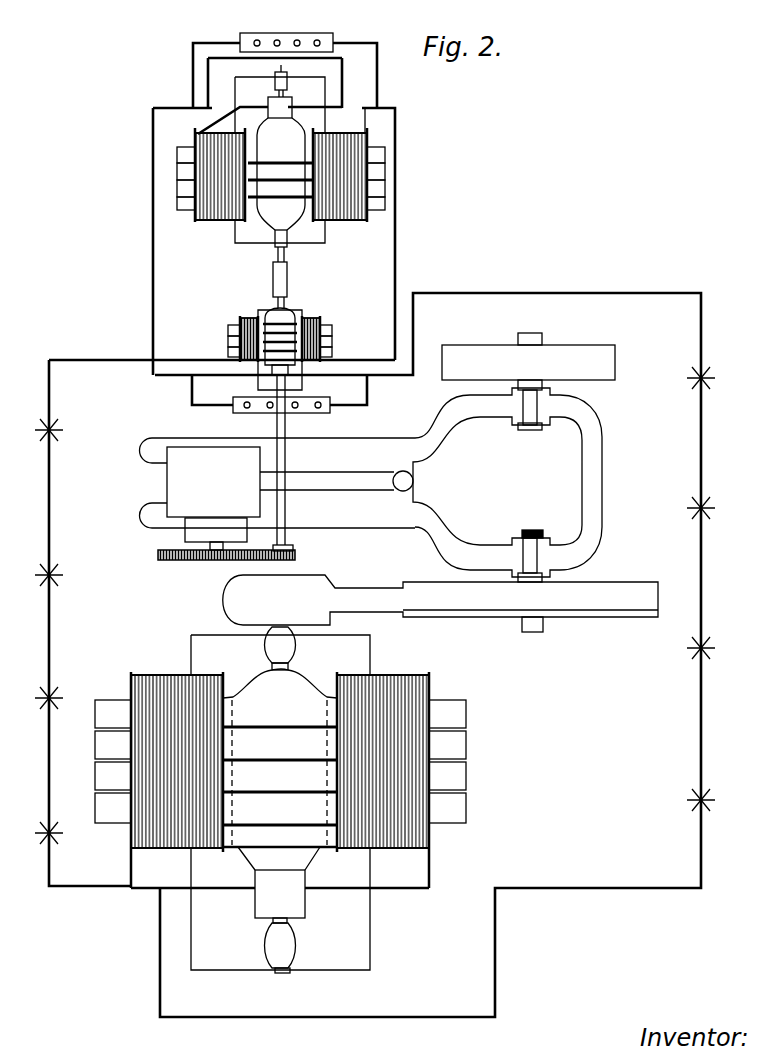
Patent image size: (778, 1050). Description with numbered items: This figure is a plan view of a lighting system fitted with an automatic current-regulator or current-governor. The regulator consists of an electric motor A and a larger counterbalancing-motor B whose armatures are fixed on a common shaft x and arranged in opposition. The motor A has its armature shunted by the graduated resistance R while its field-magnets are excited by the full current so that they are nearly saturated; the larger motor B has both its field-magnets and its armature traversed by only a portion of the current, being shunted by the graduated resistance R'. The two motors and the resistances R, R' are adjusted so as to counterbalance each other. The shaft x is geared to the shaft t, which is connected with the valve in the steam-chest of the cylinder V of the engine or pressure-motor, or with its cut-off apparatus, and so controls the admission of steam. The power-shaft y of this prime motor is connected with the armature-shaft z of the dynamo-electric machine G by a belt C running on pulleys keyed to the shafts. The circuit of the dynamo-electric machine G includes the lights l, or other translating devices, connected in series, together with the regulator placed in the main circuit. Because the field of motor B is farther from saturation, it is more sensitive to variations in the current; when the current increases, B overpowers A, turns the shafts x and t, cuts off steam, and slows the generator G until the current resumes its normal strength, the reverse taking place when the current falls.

The graduated resistance R' is at (286, 29).
The graduated resistance R is at (289, 415).
The common shaft x is at (287, 305).
The counterbalancing-motor B is at (281, 162).
The electric motor A is at (283, 340).
The cylinder V is at (278, 494).
The shaft t is at (216, 562).
The belt C is at (440, 597).
The power-shaft y is at (514, 482).
The dynamo-electric machine G is at (280, 802).
The armature-shaft z is at (289, 668).
The lights l is at (378, 530).